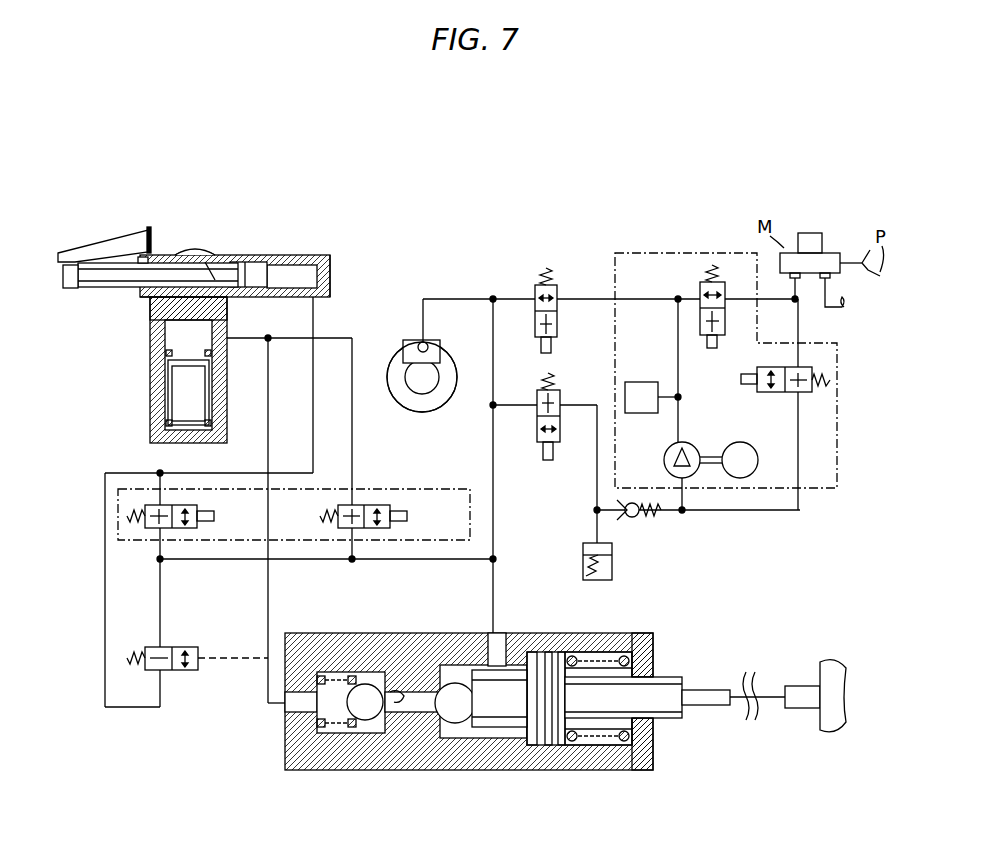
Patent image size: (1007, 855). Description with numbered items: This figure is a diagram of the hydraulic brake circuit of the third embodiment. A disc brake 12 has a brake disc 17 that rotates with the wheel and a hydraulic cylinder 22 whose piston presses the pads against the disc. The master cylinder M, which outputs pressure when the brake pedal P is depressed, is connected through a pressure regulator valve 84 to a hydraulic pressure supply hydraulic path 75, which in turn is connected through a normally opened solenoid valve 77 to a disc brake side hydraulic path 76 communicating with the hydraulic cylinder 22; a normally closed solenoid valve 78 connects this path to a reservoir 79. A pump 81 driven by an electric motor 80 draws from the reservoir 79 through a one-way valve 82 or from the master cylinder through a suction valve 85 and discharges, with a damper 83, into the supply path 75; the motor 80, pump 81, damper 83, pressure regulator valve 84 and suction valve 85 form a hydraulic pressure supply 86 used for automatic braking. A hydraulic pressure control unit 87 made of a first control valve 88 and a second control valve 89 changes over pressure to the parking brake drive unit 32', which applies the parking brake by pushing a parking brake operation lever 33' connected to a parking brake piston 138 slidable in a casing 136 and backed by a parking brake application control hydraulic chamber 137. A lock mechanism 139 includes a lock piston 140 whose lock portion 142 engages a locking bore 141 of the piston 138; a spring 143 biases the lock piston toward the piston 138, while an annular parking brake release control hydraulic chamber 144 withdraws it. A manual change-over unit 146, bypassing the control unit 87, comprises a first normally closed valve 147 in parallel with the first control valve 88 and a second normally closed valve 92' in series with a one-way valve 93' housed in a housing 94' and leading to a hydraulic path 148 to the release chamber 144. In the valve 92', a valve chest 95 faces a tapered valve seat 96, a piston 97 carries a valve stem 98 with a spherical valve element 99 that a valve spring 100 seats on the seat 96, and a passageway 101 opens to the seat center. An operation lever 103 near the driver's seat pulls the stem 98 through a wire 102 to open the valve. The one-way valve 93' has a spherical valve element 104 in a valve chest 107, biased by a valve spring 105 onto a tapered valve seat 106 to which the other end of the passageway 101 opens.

The disc brake 12 is at (403, 338).
The brake disc 17 is at (437, 400).
The hydraulic cylinder 22 is at (428, 346).
The parking brake drive unit 32' is at (150, 232).
The parking brake operation lever 33' is at (104, 231).
The hydraulic pressure supply hydraulic path 75 is at (597, 299).
The disc brake side hydraulic path 76 is at (510, 297).
The normally opened solenoid valve 77 is at (534, 283).
The normally closed solenoid valve 78 is at (532, 405).
The reservoir 79 is at (612, 548).
The electric motor 80 is at (746, 442).
The pump 81 is at (664, 458).
The one-way valve 82 is at (640, 518).
The damper 83 is at (640, 382).
The pressure regulator valve 84 is at (698, 282).
The suction valve 85 is at (764, 366).
The hydraulic pressure supply 86 is at (820, 489).
The hydraulic pressure control unit 87 is at (410, 484).
The first control valve 88 is at (214, 521).
The second control valve 89 is at (406, 525).
The second normally closed valve 92' is at (478, 610).
The one-way valve 93' is at (359, 598).
The housing 94' is at (421, 593).
The valve chest 95 is at (518, 648).
The valve seat 96 is at (472, 670).
The piston 97 is at (558, 652).
The valve stem 98 is at (598, 710).
The valve element 99 is at (460, 718).
The valve spring 100 is at (638, 635).
The passageway 101 is at (401, 688).
The wire 102 is at (772, 690).
The operation lever 103 is at (828, 661).
The valve element 104 is at (366, 718).
The valve spring 105 is at (290, 745).
The valve seat 106 is at (366, 676).
The valve chest 107 is at (290, 722).
The casing 136 is at (332, 274).
The parking brake application control hydraulic chamber 137 is at (288, 264).
The parking brake piston 138 is at (250, 265).
The lock mechanism 139 is at (192, 245).
The lock piston 140 is at (150, 320).
The locking bore 141 is at (210, 258).
The lock portion 142 is at (170, 261).
The spring 143 is at (150, 411).
The parking brake release control hydraulic chamber 144 is at (224, 331).
The manual change-over unit 146 is at (485, 697).
The first normally closed valve 147 is at (182, 647).
The hydraulic path 148 is at (268, 632).